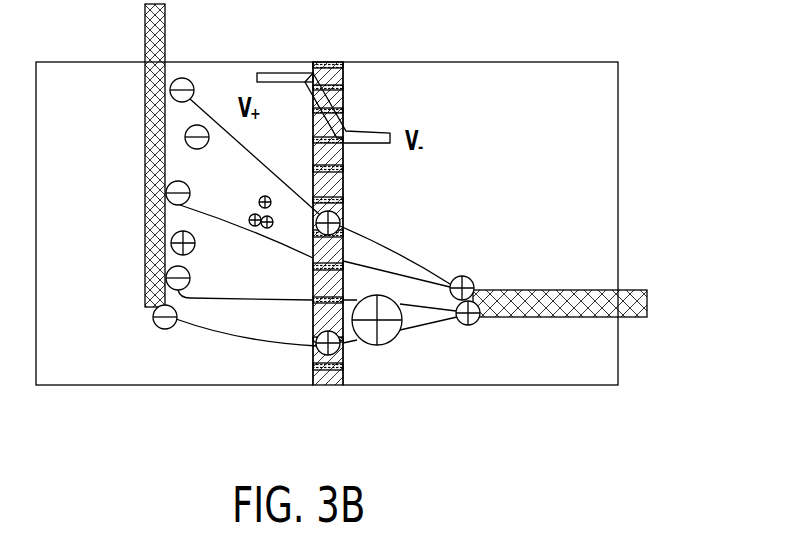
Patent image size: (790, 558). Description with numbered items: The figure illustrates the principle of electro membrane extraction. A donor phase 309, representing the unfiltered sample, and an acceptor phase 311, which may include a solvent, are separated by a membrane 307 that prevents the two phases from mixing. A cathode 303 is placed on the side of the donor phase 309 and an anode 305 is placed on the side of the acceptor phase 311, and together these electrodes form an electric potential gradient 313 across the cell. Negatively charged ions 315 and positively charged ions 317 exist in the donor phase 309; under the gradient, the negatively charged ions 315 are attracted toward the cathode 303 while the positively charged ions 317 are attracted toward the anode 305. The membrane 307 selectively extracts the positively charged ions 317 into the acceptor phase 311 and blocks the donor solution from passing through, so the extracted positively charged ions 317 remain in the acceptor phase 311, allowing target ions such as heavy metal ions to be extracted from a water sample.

The cathode 303 is at (152, 35).
The anode 305 is at (627, 298).
The membrane 307 is at (330, 384).
The donor phase 309 is at (85, 377).
The acceptor phase 311 is at (600, 90).
The electric potential gradient 313 is at (258, 75).
The negatively charged ions 315 is at (153, 315).
The positively charged ions 317 is at (341, 222).